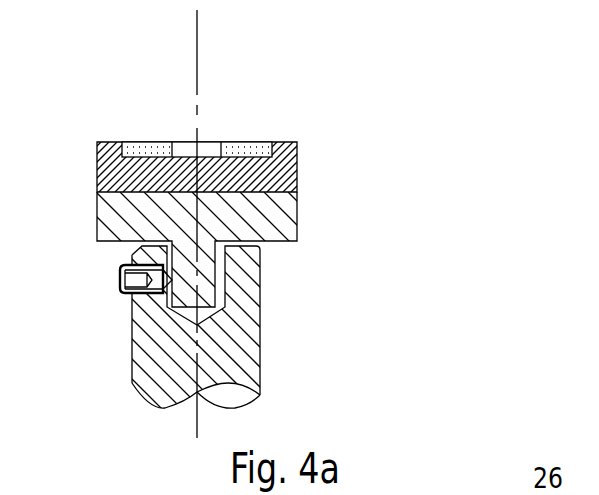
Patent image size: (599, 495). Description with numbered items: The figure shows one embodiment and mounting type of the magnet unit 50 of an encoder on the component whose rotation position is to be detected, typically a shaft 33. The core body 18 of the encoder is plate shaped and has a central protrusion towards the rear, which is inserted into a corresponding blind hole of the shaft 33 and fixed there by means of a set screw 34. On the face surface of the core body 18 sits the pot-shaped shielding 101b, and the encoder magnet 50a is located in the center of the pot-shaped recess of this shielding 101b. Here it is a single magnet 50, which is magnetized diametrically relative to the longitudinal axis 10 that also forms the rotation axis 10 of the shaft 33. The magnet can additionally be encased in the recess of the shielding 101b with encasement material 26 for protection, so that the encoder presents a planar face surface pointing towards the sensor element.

The longitudinal axis 10 is at (197, 70).
The core body 18 is at (118, 230).
The encasement material 26 is at (137, 147).
The shaft 33 is at (147, 383).
The set screw 34 is at (120, 292).
The magnet unit 50 is at (204, 113).
The encoder magnet 50a is at (208, 155).
The pot-shaped shielding 101b is at (96, 165).